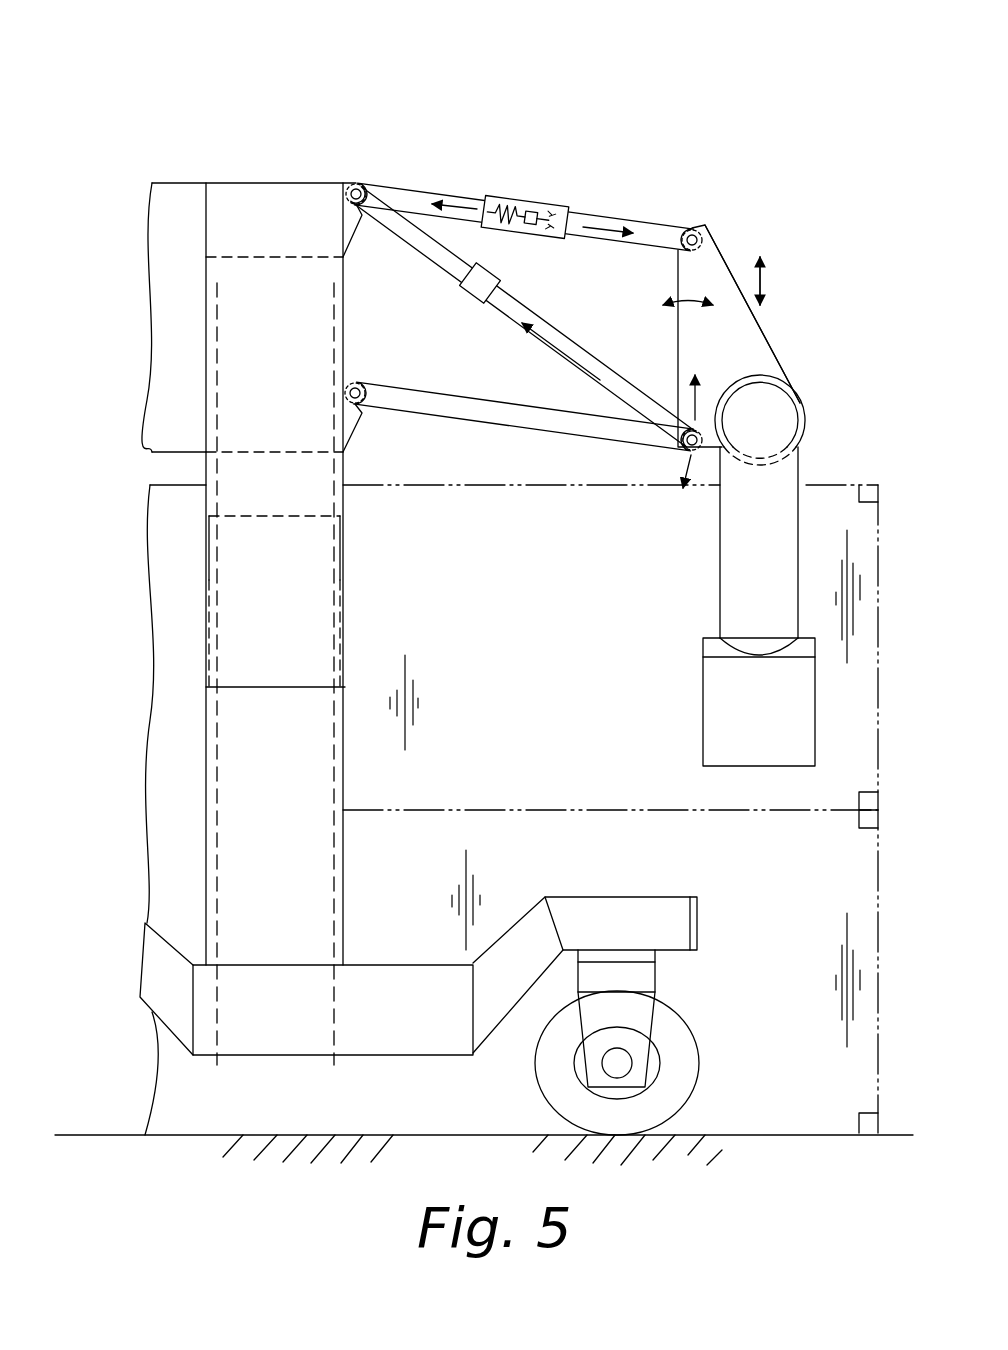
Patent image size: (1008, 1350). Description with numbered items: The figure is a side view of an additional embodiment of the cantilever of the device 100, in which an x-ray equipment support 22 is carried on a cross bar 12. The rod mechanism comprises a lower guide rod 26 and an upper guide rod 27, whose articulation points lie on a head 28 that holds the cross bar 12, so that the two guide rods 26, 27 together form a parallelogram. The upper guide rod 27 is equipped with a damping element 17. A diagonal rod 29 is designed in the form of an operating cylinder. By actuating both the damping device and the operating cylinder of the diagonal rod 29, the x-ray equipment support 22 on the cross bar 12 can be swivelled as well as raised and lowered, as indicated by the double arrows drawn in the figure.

The rail vehicle apparatus 100 is at (355, 92).
The damping element 17 is at (510, 198).
The upper guide rod 27 is at (622, 216).
The diagonal rod 29 is at (568, 314).
The lower guide rod 26 is at (537, 418).
The head 28 is at (743, 330).
The cross bar 12 is at (802, 402).
The x-ray equipment support 22 is at (796, 472).